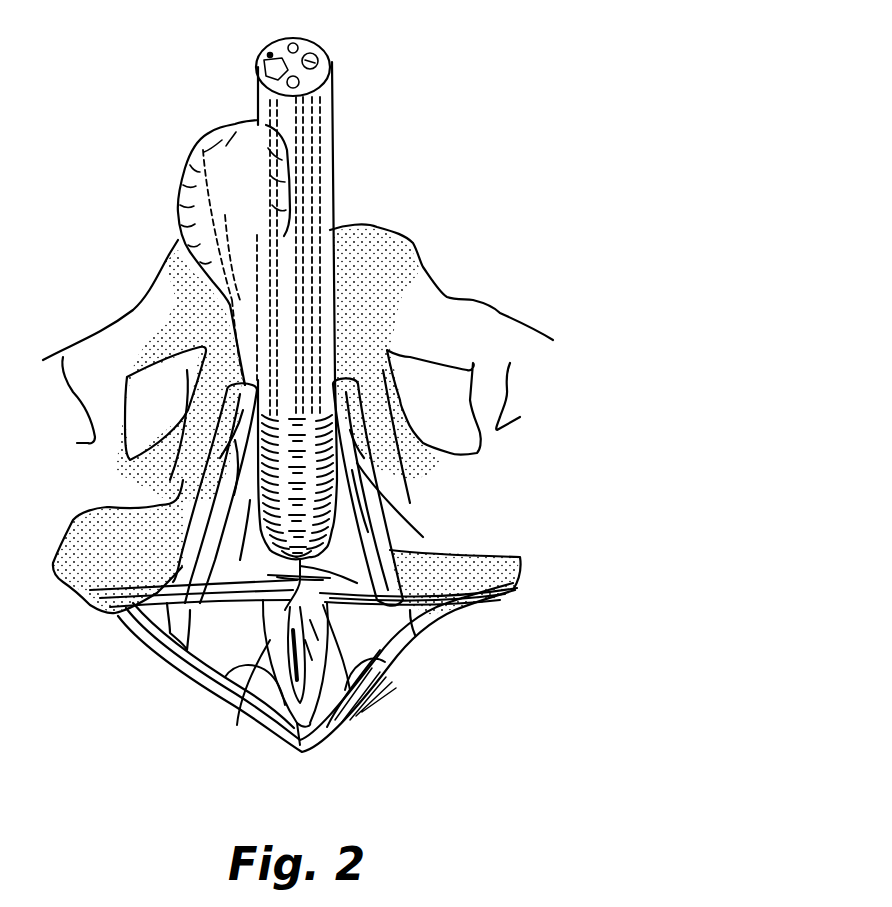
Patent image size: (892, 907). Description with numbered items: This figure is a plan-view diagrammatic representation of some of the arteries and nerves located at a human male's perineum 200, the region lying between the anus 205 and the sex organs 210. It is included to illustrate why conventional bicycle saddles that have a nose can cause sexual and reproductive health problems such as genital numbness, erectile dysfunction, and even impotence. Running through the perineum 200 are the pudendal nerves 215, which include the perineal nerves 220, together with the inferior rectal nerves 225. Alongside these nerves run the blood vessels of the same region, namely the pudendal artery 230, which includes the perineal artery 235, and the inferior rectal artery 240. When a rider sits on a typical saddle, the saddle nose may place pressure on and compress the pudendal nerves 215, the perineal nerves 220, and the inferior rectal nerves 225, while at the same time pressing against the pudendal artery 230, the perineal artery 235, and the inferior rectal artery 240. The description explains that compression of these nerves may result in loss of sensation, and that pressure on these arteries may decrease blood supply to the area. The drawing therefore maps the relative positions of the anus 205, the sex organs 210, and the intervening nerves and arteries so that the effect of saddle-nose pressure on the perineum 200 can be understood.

The perineum 200 is at (489, 132).
The anus 205 is at (313, 680).
The sex organs 210 is at (337, 97).
The pudendal nerves 215 is at (140, 643).
The perineal nerves 220 is at (187, 657).
The inferior rectal nerves 225 is at (225, 677).
The pudendal artery 230 is at (412, 617).
The perineal artery 235 is at (355, 583).
The inferior rectal artery 240 is at (393, 667).